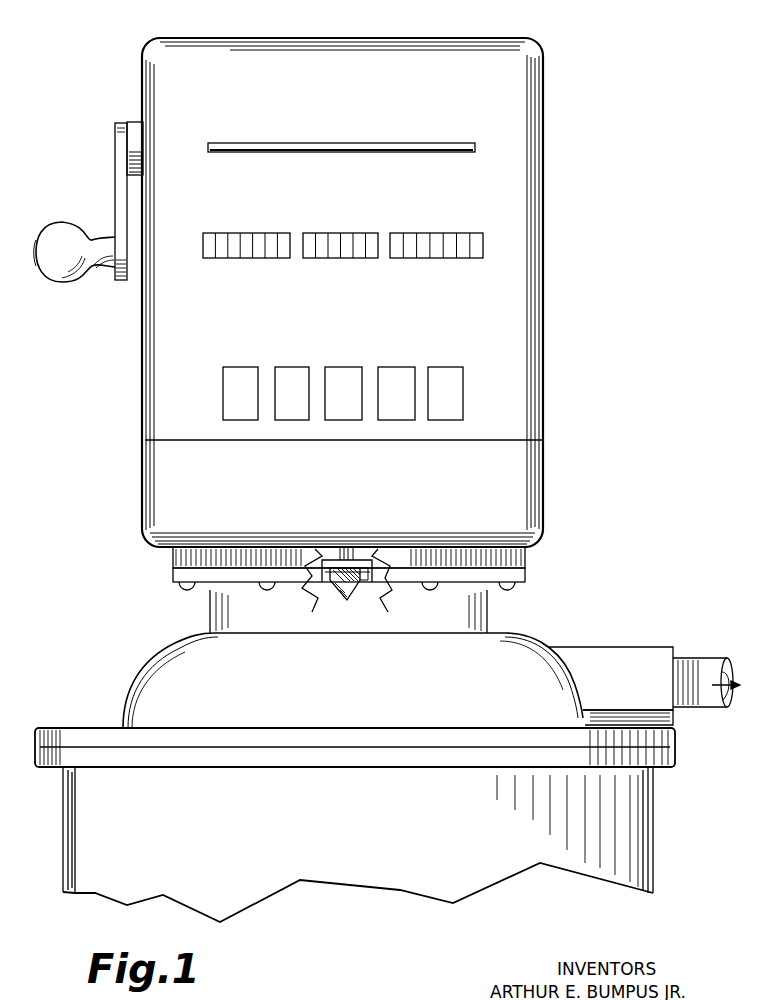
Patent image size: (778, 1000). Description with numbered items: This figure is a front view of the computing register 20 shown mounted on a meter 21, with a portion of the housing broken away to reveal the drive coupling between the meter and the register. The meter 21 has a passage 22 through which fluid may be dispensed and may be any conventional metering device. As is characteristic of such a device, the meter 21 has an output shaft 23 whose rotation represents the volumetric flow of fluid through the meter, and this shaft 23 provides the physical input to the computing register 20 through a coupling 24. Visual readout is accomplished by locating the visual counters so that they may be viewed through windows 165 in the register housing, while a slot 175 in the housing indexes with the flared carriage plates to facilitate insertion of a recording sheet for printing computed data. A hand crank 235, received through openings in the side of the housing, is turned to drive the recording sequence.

The computing register 20 is at (142, 398).
The meter 21 is at (140, 670).
The passage 22 is at (705, 665).
The output shaft 23 is at (340, 594).
The coupling 24 is at (378, 598).
The windows 165 is at (222, 235).
The slot 175 is at (258, 148).
The hand crank 235 is at (118, 170).